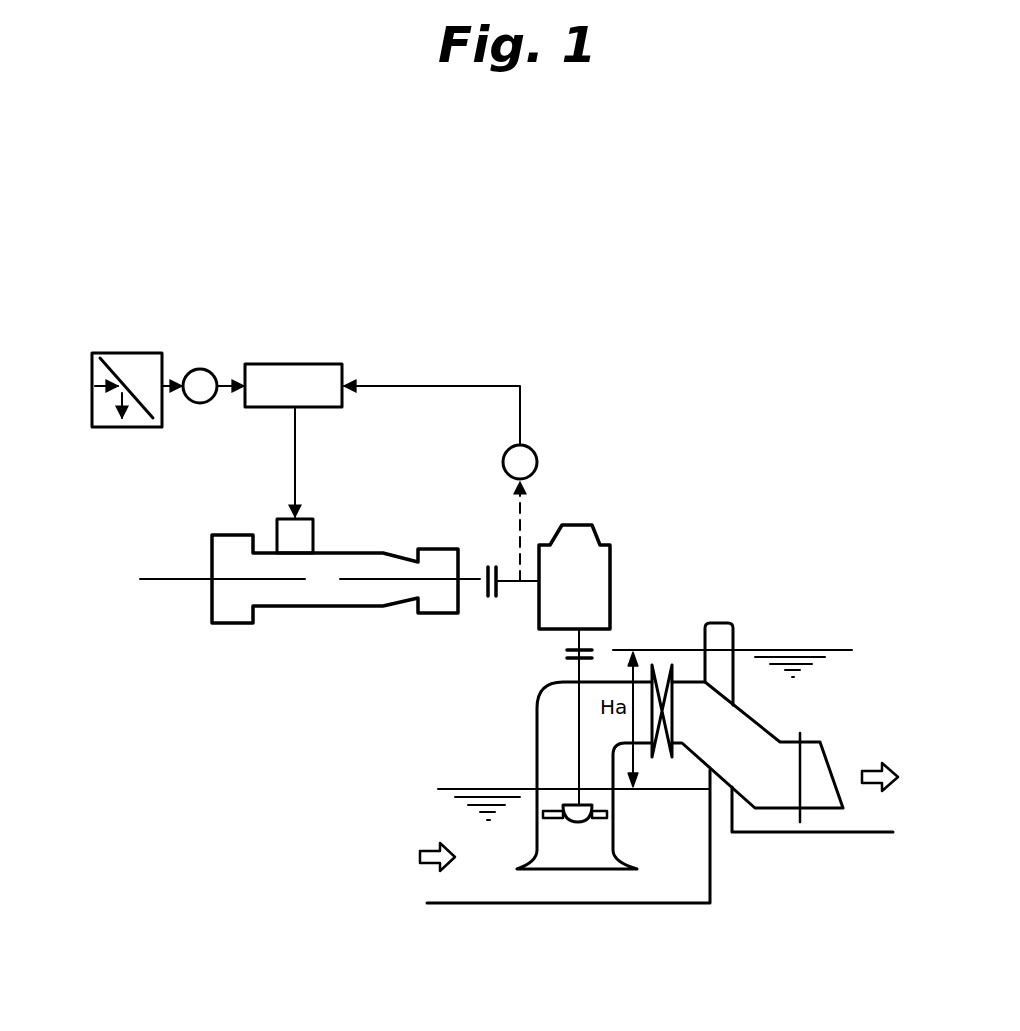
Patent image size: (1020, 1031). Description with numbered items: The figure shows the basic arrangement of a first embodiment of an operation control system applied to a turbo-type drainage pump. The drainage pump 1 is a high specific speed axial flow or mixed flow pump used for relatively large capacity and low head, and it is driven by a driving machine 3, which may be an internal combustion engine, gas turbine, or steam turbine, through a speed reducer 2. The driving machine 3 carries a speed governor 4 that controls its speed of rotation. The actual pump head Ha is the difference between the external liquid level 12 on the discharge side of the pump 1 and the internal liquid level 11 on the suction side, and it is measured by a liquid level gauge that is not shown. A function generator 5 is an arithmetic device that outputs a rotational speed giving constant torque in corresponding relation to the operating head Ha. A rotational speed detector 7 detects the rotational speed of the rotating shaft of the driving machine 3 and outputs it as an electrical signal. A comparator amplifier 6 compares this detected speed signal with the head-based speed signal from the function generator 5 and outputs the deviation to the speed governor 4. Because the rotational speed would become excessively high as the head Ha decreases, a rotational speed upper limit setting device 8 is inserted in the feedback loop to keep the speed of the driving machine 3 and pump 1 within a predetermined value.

The drainage pump 1 is at (615, 830).
The speed reducer 2 is at (612, 598).
The driving machine 3 is at (336, 608).
The speed governor 4 is at (314, 535).
The function generator 5 is at (148, 352).
The comparator amplifier 6 is at (310, 364).
The rotational speed detector 7 is at (538, 462).
The rotational speed upper limit setting device 8 is at (207, 369).
The internal liquid level 11 is at (468, 785).
The external liquid level 12 is at (793, 648).